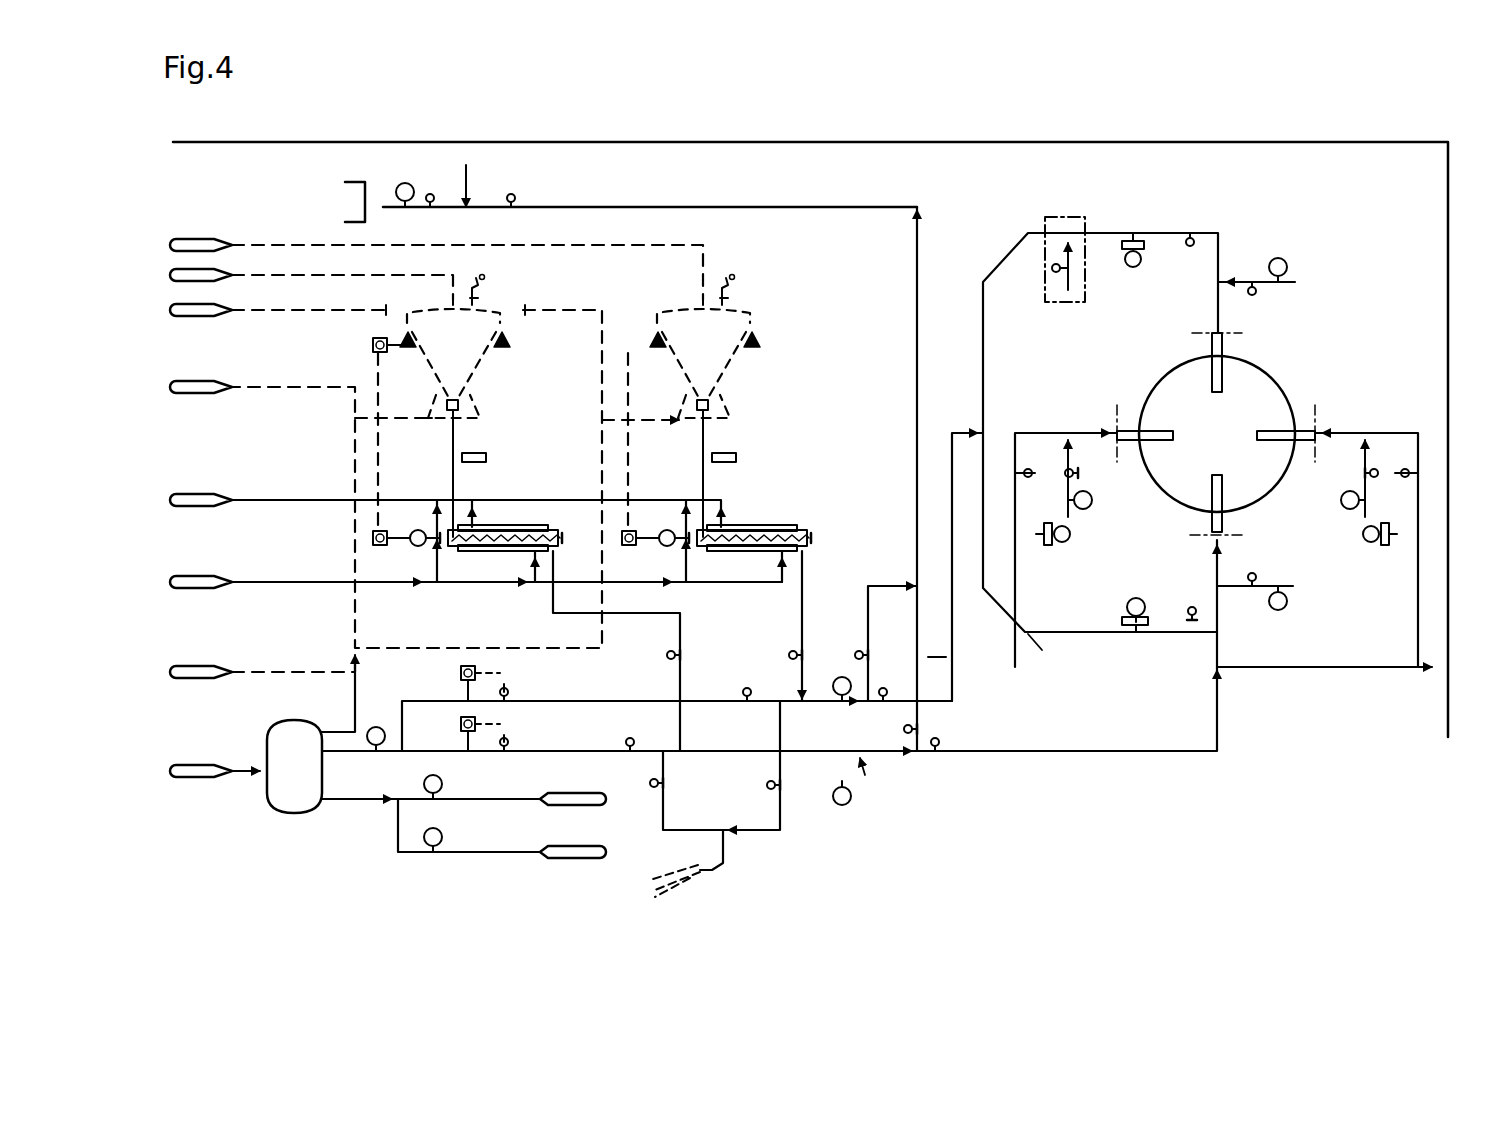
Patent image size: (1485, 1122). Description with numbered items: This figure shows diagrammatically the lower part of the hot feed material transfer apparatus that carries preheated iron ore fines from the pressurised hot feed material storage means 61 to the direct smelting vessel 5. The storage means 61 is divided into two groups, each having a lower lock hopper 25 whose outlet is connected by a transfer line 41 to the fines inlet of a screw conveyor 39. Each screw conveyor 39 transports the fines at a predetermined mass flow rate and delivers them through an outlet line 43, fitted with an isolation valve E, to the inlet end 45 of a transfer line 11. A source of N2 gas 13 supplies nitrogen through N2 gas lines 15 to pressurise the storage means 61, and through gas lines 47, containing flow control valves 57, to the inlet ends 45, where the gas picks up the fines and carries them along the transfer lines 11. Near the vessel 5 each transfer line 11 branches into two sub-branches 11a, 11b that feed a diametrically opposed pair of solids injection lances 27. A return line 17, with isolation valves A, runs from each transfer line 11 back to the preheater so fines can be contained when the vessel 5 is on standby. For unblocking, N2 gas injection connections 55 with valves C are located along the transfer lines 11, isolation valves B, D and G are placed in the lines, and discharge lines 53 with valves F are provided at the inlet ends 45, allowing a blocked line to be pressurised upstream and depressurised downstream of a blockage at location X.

The direct smelting vessel 5 is at (1318, 270).
The transfer line 11 is at (953, 678).
The sub-branch 11a is at (1073, 632).
The sub-branch 11b is at (1111, 232).
The N2 gas source 13 is at (270, 800).
The N2 gas line 15 is at (361, 662).
The return line 17 is at (917, 378).
The lower lock hopper 25 is at (497, 390).
The solids injection lance 27 is at (1222, 360).
The screw conveyor 39 is at (510, 524).
The transfer line 41 is at (452, 445).
The outlet line 43 is at (628, 614).
The inlet end 45 is at (813, 722).
The gas line 47 is at (546, 749).
The discharge line 53 is at (664, 795).
The N2 gas injection connection 55 is at (1032, 228).
The flow control valve 57 is at (464, 705).
The hot feed material storage means 61 is at (335, 343).